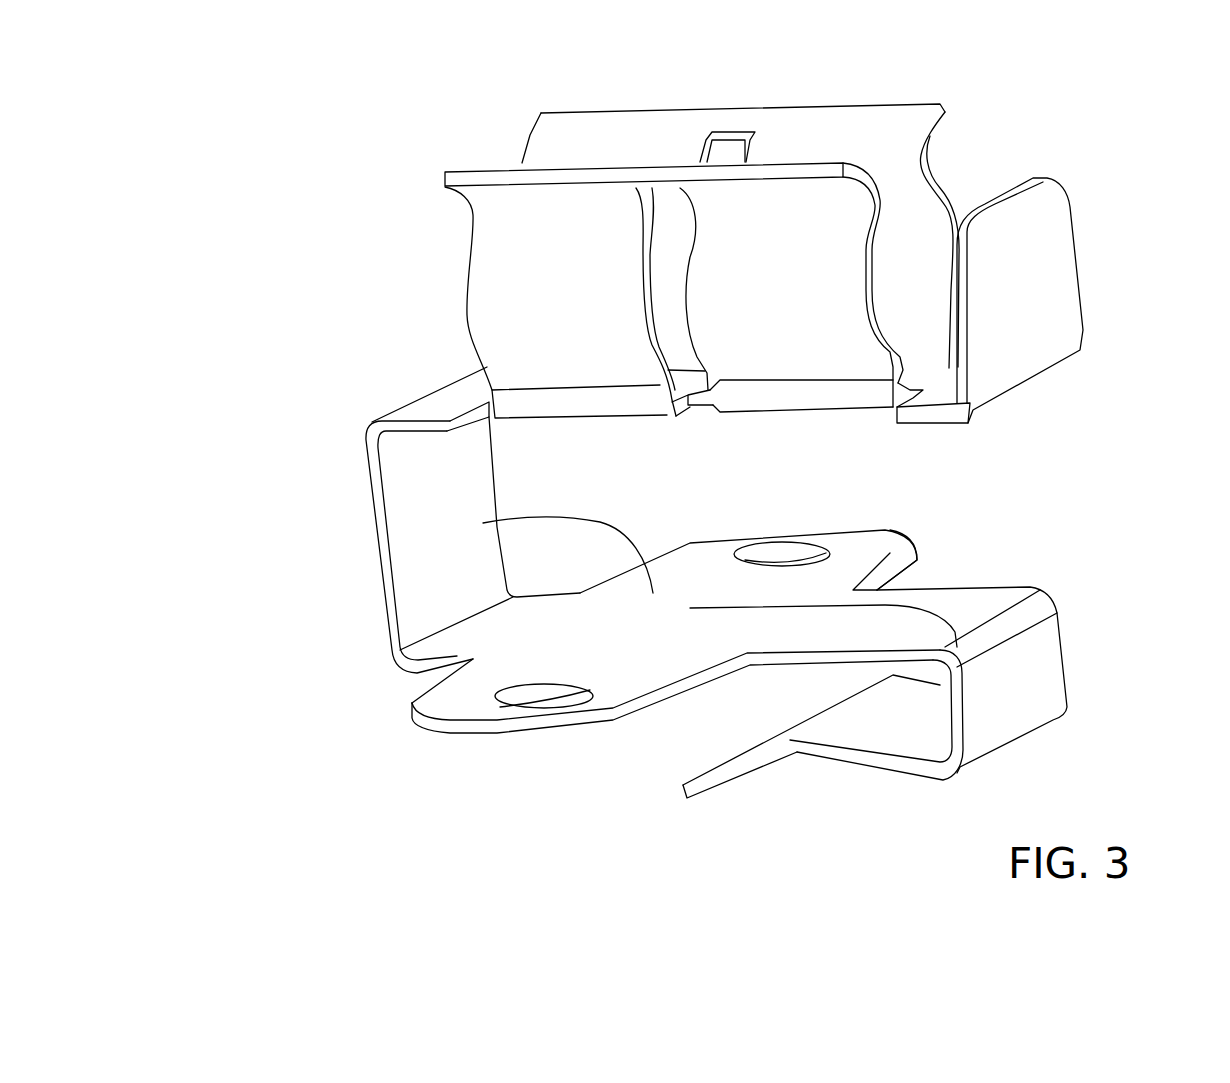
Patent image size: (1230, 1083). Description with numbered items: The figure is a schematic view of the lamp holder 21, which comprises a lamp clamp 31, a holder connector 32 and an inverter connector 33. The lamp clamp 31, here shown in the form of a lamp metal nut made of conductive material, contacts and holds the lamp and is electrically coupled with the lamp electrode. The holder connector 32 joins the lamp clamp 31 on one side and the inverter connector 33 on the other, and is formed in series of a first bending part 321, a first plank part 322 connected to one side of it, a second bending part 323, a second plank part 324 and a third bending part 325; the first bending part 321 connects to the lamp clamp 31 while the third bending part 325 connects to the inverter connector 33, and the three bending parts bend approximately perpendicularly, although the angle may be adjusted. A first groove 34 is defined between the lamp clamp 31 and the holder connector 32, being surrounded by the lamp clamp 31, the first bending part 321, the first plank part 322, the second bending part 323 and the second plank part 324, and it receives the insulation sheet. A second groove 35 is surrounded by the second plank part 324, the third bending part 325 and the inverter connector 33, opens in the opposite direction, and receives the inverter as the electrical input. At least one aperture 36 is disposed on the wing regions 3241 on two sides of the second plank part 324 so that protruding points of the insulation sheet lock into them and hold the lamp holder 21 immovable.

The lamp holder 21 is at (381, 98).
The lamp clamp 31 is at (540, 310).
The holder connector 32 is at (237, 392).
The first bending part 321 is at (368, 435).
The first plank part 322 is at (417, 470).
The second bending part 323 is at (413, 660).
The second plank part 324 is at (483, 523).
The wing regions 3241 is at (887, 553).
The third bending part 325 is at (690, 608).
The inverter connector 33 is at (880, 728).
The first groove 34 is at (751, 473).
The second groove 35 is at (812, 692).
The aperture 36 is at (790, 553).